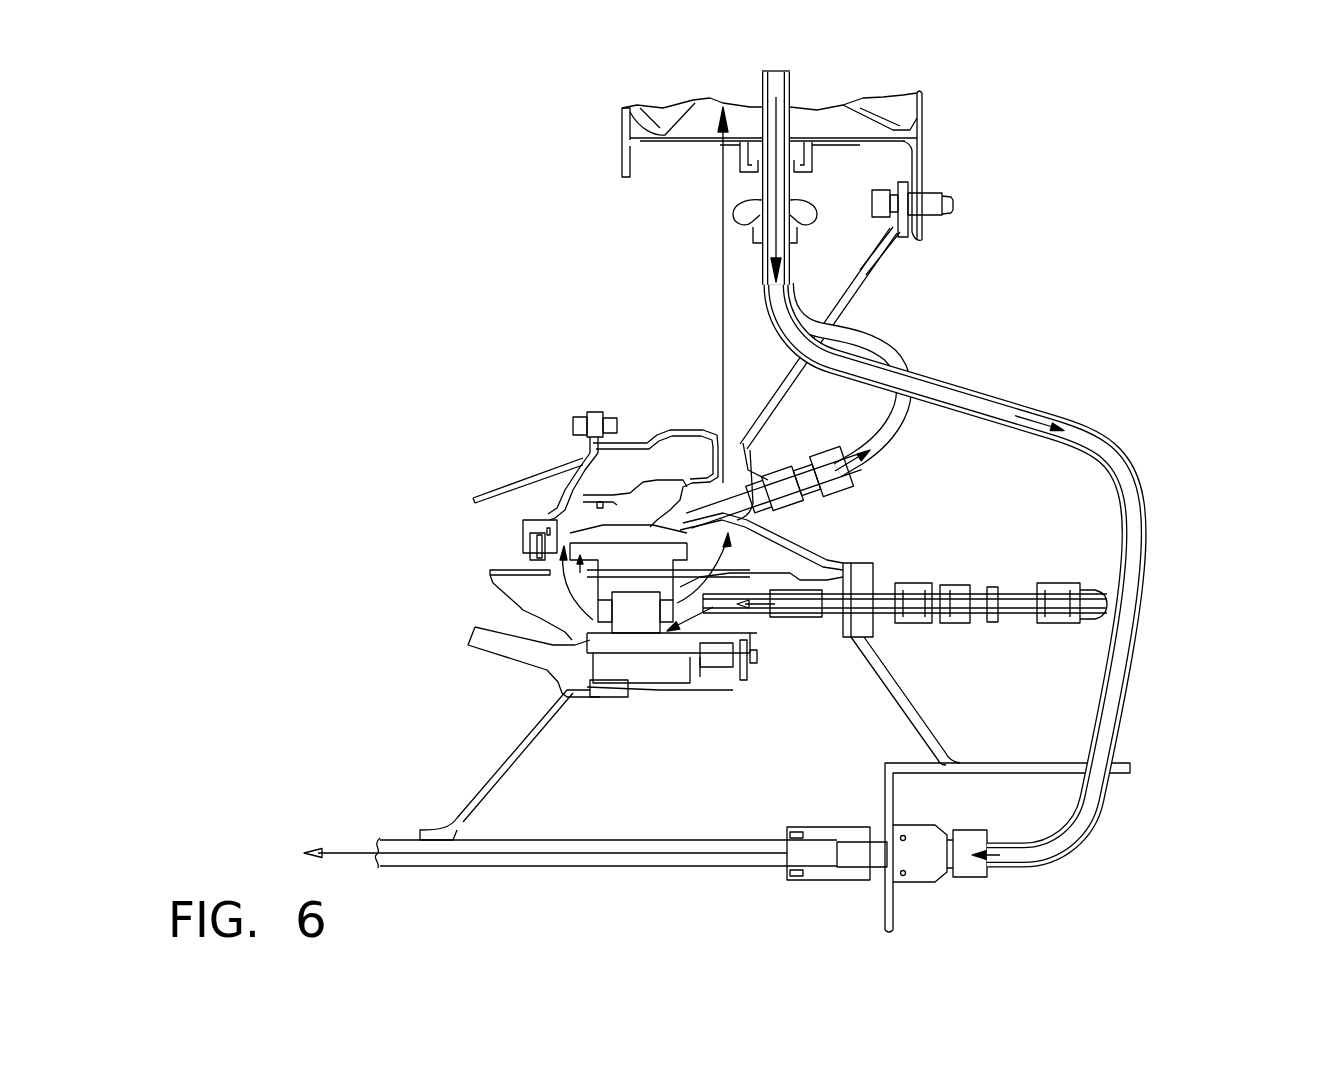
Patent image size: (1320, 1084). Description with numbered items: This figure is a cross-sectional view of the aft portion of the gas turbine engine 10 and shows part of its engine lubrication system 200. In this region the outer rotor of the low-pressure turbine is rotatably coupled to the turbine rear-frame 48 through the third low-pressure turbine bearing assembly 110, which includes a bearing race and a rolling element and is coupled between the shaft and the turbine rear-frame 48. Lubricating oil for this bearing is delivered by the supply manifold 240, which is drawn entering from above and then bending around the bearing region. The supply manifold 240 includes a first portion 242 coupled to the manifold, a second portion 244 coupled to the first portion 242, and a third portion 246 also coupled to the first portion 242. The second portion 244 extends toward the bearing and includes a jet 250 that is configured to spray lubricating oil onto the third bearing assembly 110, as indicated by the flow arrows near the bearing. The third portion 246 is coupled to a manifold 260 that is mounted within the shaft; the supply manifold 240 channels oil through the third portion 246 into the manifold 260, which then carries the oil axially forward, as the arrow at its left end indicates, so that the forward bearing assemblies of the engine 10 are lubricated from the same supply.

The gas turbine engine 10 is at (1093, 113).
The turbine rear-frame 48 is at (918, 234).
The third low-pressure turbine bearing assembly 110 is at (664, 688).
The engine lubrication system 200 is at (1118, 452).
The supply manifold 240 is at (773, 80).
The first portion 242 is at (1140, 494).
The second portion 244 is at (1013, 617).
The third portion 246 is at (904, 884).
The jet 250 is at (753, 618).
The manifold 260 is at (598, 868).